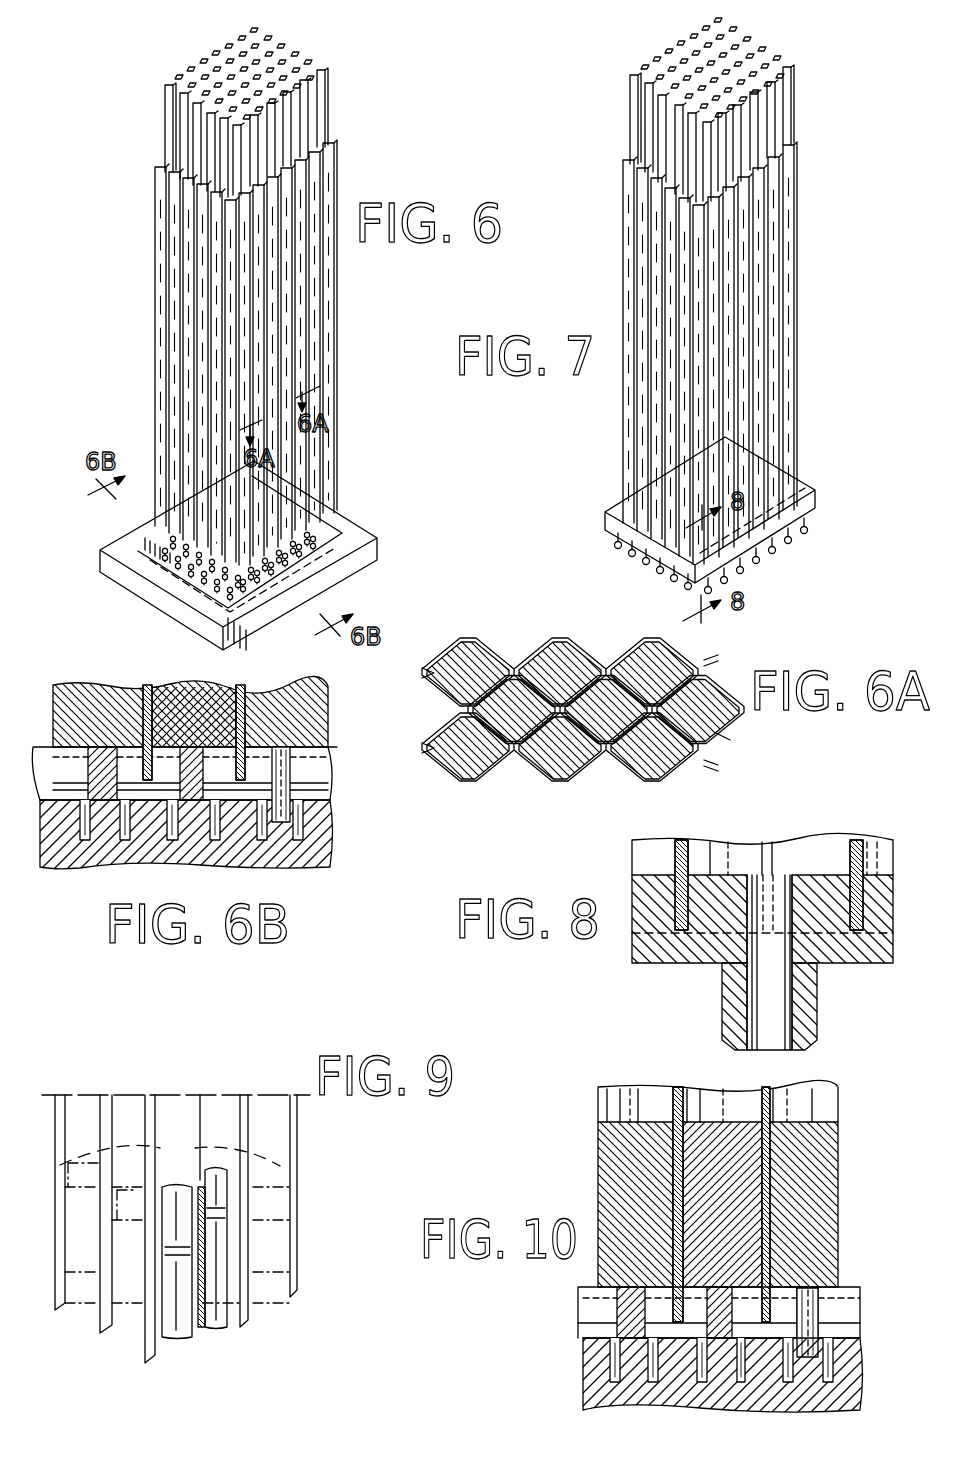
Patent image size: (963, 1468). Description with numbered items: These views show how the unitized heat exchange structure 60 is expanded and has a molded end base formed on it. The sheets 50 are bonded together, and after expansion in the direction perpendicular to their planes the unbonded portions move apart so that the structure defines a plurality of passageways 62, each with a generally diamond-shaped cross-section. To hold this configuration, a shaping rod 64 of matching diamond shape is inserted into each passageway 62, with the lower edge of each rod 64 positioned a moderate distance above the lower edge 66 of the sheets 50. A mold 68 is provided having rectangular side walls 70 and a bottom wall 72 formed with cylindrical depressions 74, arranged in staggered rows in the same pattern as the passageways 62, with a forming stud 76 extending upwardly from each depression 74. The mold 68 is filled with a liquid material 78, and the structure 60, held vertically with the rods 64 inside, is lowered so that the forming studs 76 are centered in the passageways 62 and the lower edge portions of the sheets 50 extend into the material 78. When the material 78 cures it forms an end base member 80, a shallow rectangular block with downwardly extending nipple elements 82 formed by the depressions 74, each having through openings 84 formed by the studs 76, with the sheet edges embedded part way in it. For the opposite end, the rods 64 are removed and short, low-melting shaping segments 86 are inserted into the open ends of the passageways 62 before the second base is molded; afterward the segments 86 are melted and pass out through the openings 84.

In FIG. 8, the sheets 50 is at (682, 845).
In FIG. 10, the sheets 50 is at (770, 1205).
In FIG. 6A, the unitized heat exchange structure 60 is at (583, 702).
In FIG. 6A, the passageways 62 is at (545, 762).
In FIG. 6A, the shaping rods 64 is at (545, 663).
In FIG. 6B, the shaping rods 64 is at (90, 700).
In FIG. 6, the lower edge 66 is at (323, 513).
In FIG. 6, the mold 68 is at (360, 533).
In FIG. 6B, the mold 68 is at (68, 860).
In FIG. 10, the mold 68 is at (585, 1393).
In FIG. 6, the side walls 70 is at (360, 567).
In FIG. 6B, the bottom wall 72 is at (330, 795).
In FIG. 10, the bottom wall 72 is at (778, 1345).
In FIG. 6B, the cylindrical depressions 74 is at (290, 825).
In FIG. 10, the cylindrical depressions 74 is at (660, 1372).
In FIG. 6, the forming studs 76 is at (233, 578).
In FIG. 6B, the forming studs 76 is at (282, 762).
In FIG. 10, the forming studs 76 is at (632, 1310).
In FIG. 6B, the liquid material 78 is at (330, 776).
In FIG. 8, the end base member 80 is at (680, 950).
In FIG. 8, the nipple elements 82 is at (812, 1000).
In FIG. 8, the through openings 84 is at (785, 1037).
In FIG. 9, the shaping segments 86 is at (205, 1185).
In FIG. 10, the shaping segments 86 is at (700, 1145).